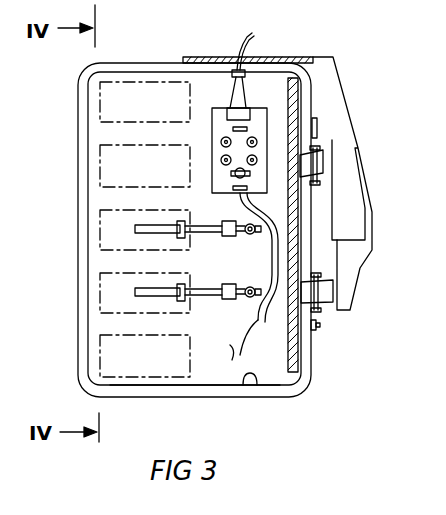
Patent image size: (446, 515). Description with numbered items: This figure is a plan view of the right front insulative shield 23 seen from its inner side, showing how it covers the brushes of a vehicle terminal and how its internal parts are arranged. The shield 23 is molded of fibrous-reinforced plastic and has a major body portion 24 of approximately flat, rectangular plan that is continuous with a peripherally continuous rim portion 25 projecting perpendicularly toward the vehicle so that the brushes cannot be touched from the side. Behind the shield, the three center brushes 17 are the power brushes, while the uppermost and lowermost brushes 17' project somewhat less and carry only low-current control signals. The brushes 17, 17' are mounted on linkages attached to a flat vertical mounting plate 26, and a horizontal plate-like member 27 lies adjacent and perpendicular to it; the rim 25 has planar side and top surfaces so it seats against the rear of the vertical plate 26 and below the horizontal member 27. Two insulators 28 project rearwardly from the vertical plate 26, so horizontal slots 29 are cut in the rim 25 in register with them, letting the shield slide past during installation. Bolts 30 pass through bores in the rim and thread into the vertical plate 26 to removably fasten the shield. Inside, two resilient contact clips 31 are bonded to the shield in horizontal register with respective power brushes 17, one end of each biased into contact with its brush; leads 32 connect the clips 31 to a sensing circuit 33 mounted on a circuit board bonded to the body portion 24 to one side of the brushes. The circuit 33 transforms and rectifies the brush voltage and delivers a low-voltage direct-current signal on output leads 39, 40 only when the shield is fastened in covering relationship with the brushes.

The uppermost and lowermost brushes 17' is at (108, 102).
The center brushes 17 is at (109, 260).
The insulative shield 23 is at (70, 291).
The major body portion 24 is at (220, 360).
The rim portion 25 is at (255, 388).
The vertical mounting plate 26 is at (290, 358).
The horizontal plate-like member 27 is at (295, 56).
The insulators 28 is at (326, 310).
The horizontal slots 29 is at (303, 270).
The bolts 30 is at (321, 330).
The contact clips 31 is at (178, 300).
The leads 32 is at (275, 250).
The sensing circuit 33 is at (268, 125).
The output lead 39 is at (218, 47).
The output lead 40 is at (195, 45).